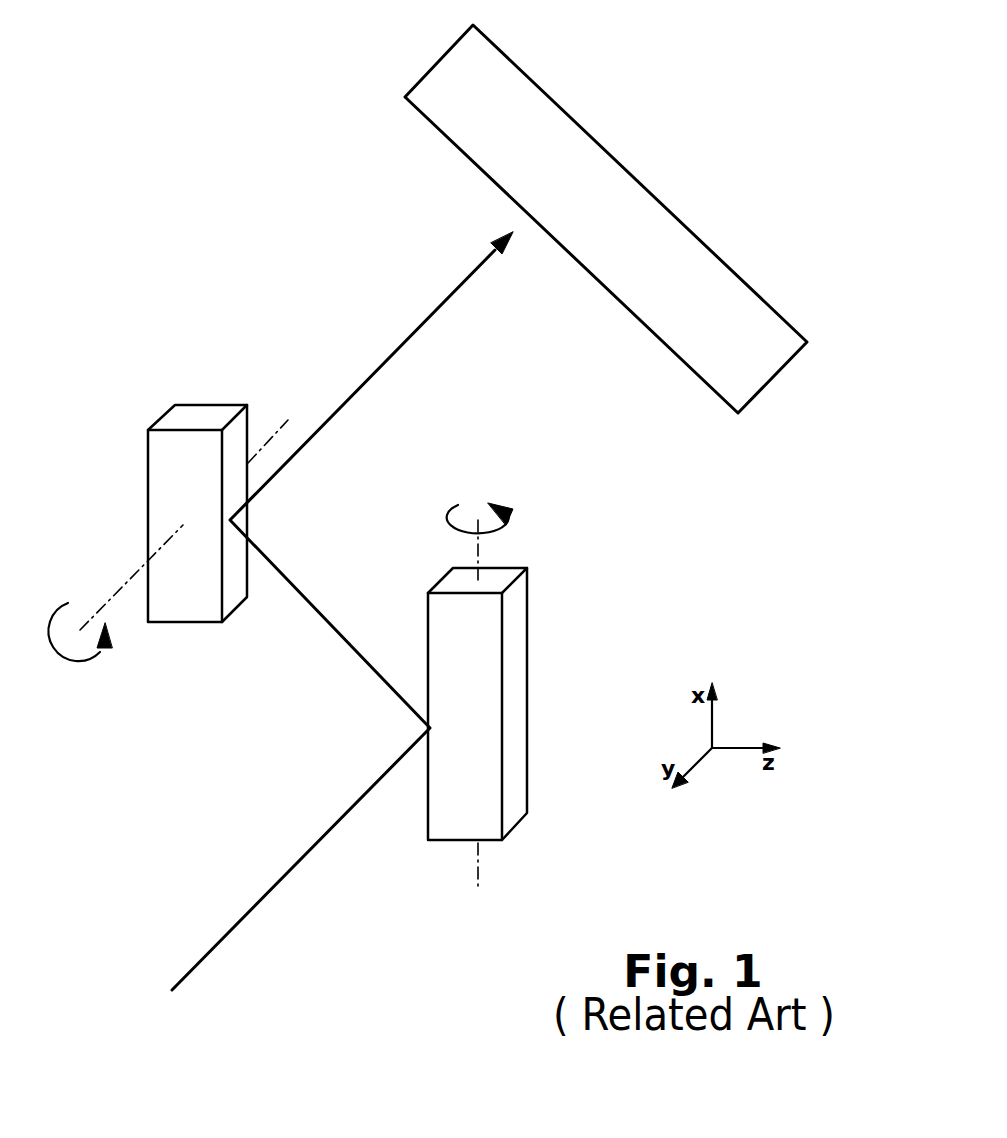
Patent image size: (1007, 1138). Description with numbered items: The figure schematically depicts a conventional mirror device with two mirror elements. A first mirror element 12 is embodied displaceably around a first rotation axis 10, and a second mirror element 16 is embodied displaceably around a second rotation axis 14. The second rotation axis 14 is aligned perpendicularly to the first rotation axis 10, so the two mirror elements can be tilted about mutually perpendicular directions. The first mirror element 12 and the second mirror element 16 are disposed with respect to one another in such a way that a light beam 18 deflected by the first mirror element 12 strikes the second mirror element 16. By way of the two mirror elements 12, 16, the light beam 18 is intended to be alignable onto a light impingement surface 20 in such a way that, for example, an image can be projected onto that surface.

The first rotation axis 10 is at (480, 880).
The first mirror element 12 is at (518, 675).
The second rotation axis 14 is at (110, 600).
The second mirror element 16 is at (207, 410).
The light beam 18 is at (390, 355).
The light impingement surface 20 is at (698, 365).